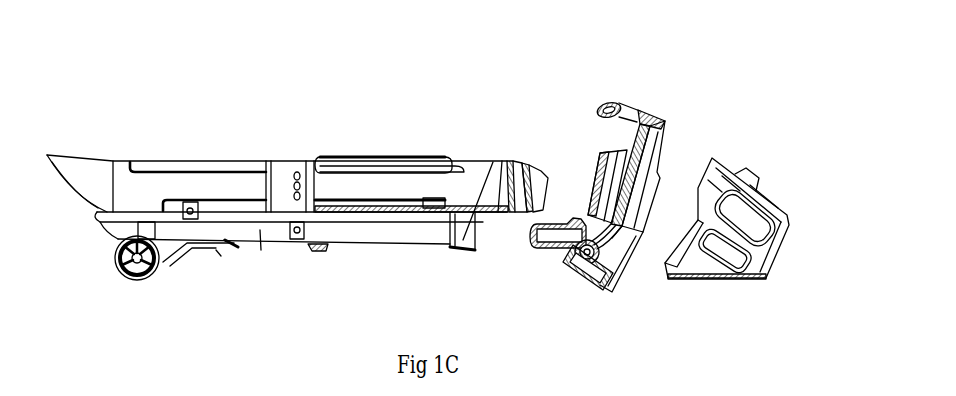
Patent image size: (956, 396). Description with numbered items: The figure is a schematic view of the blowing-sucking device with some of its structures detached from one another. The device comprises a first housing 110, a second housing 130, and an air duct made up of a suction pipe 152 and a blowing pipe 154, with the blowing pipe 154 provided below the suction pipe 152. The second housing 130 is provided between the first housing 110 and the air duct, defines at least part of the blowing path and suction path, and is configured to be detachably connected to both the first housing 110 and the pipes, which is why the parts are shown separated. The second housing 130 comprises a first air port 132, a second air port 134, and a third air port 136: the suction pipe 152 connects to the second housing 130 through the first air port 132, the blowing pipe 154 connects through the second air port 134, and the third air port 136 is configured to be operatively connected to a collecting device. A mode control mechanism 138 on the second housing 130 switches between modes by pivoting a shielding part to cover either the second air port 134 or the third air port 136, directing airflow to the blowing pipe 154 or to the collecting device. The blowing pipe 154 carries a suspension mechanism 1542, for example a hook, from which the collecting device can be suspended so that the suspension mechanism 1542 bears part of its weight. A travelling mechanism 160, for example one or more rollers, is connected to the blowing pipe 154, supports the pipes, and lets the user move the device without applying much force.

The first housing 110 is at (782, 198).
The second housing 130 is at (576, 196).
The first air port 132 is at (592, 187).
The second air port 134 is at (525, 239).
The third air port 136 is at (577, 290).
The mode control mechanism 138 is at (575, 256).
The suction pipe 152 is at (200, 162).
The blowing pipe 154 is at (260, 229).
The suspension mechanism 1542 is at (333, 253).
The travelling mechanism 160 is at (140, 283).